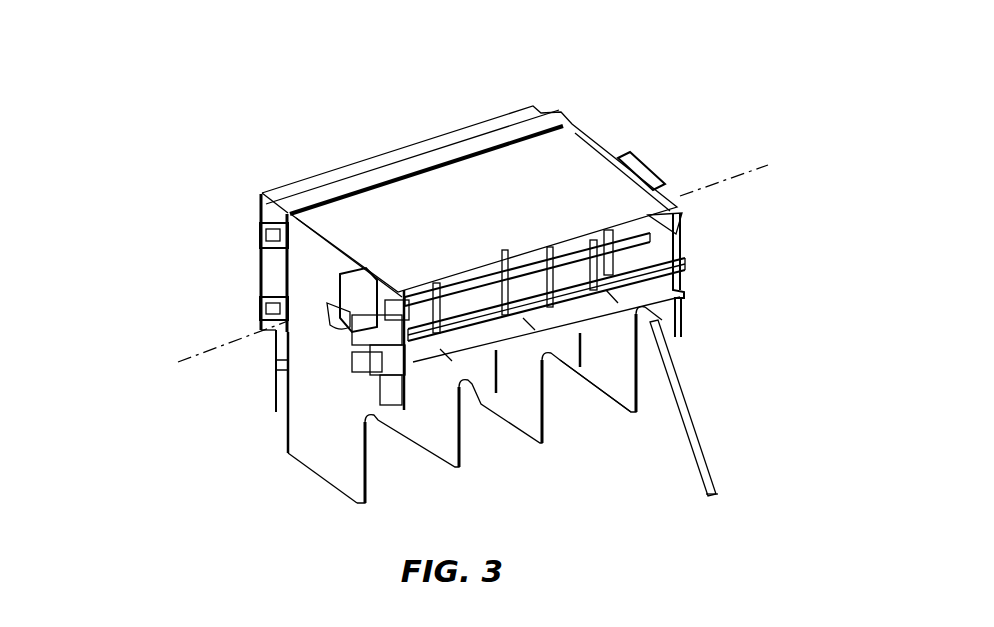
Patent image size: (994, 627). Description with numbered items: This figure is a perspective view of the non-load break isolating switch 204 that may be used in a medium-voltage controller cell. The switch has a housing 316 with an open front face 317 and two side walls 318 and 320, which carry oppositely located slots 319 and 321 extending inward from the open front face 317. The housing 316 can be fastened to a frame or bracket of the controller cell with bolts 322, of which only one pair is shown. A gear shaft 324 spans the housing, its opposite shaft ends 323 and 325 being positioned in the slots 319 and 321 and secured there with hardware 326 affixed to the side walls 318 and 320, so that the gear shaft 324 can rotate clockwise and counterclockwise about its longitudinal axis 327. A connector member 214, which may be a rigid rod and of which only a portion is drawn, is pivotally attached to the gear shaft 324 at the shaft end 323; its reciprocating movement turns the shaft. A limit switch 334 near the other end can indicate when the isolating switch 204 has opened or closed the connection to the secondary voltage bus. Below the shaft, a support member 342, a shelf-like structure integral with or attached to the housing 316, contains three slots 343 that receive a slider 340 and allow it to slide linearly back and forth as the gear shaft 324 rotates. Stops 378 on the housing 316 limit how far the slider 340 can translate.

The non-load break isolating switch 204 is at (621, 101).
The connector member 214 is at (700, 455).
The housing 316 is at (430, 190).
The open front face 317 is at (590, 492).
The side wall 318 is at (350, 485).
The slot 319 is at (390, 301).
The side wall 320 is at (622, 392).
The slot 321 is at (650, 246).
The bolts 322 is at (257, 230).
The shaft end 323 is at (669, 234).
The gear shaft 324 is at (480, 287).
The shaft end 325 is at (326, 328).
The hardware 326 is at (346, 282).
The longitudinal axis 327 is at (768, 163).
The limit switch 334 is at (348, 360).
The slider 340 is at (504, 296).
The support member 342 is at (620, 310).
The slots 343 is at (613, 297).
The stops 378 is at (549, 250).